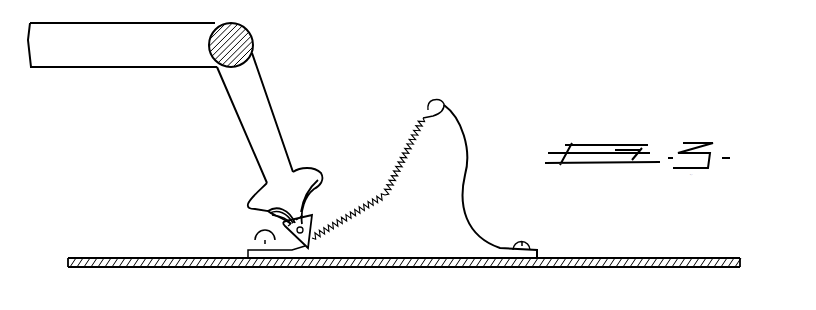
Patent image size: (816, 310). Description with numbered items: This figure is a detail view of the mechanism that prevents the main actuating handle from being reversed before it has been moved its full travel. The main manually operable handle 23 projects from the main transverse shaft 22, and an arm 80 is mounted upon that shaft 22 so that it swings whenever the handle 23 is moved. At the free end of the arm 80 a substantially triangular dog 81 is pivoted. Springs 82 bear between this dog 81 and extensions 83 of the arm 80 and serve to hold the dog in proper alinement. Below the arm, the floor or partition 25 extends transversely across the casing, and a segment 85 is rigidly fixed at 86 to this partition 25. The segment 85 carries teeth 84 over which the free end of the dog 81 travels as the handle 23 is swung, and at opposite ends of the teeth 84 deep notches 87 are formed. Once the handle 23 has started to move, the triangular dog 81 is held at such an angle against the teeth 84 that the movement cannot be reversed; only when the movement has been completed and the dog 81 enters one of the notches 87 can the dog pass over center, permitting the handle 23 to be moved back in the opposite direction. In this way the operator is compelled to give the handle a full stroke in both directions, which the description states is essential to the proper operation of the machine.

The main transverse shaft 22 is at (250, 47).
The main manually operable handle 23 is at (122, 45).
The floor or partition 25 is at (455, 258).
The arm 80 is at (268, 128).
The triangular dog 81 is at (311, 220).
The springs 82 is at (278, 217).
The extensions 83 is at (255, 203).
The teeth 84 is at (368, 178).
The segment 85 is at (481, 181).
The fixing point 86 is at (523, 245).
The deep notches 87 is at (310, 249).